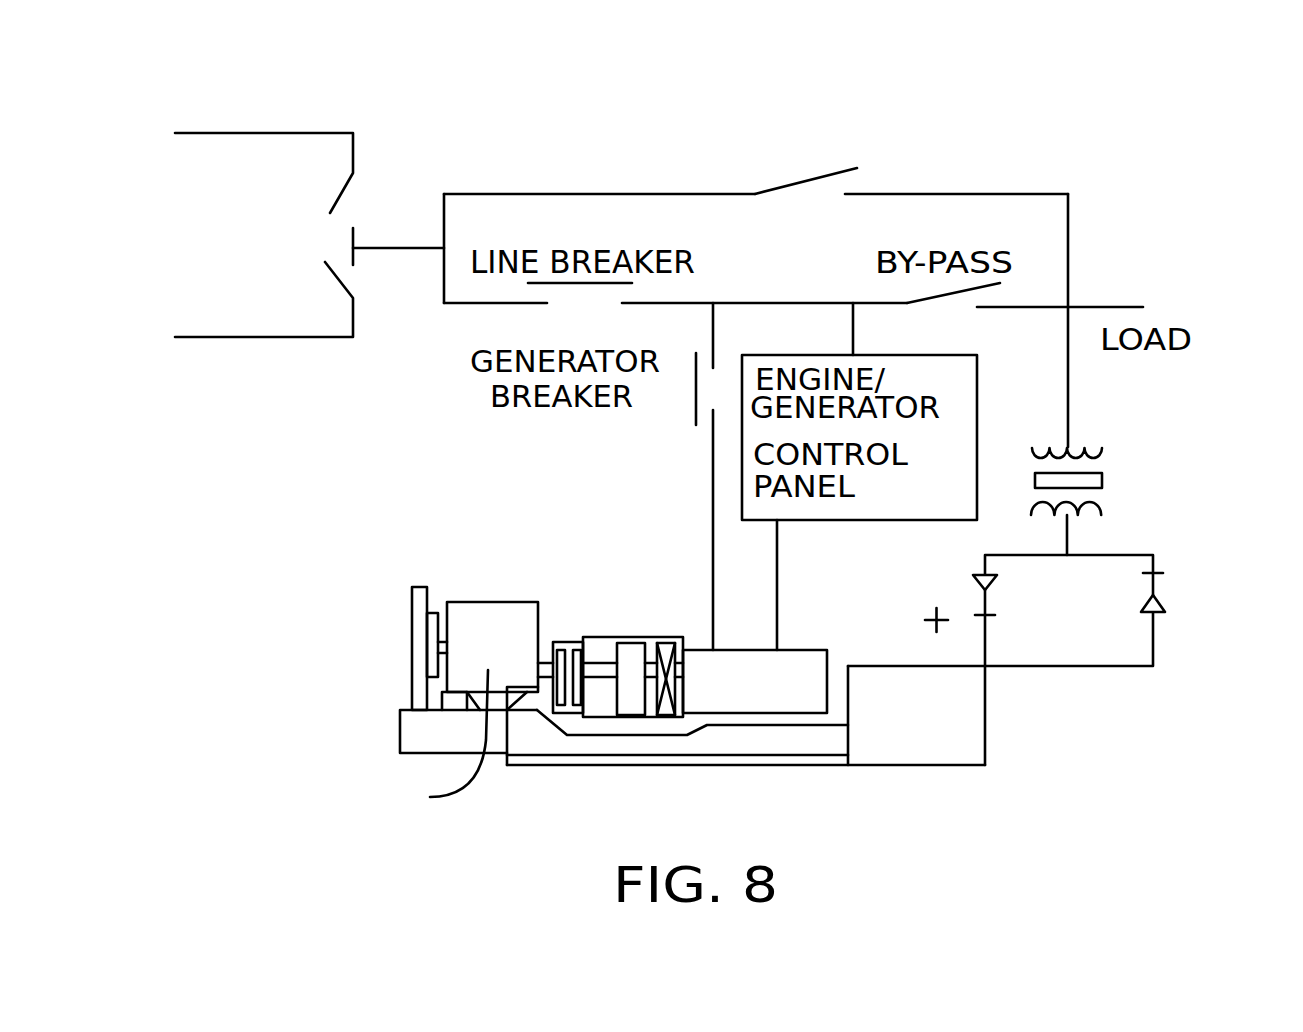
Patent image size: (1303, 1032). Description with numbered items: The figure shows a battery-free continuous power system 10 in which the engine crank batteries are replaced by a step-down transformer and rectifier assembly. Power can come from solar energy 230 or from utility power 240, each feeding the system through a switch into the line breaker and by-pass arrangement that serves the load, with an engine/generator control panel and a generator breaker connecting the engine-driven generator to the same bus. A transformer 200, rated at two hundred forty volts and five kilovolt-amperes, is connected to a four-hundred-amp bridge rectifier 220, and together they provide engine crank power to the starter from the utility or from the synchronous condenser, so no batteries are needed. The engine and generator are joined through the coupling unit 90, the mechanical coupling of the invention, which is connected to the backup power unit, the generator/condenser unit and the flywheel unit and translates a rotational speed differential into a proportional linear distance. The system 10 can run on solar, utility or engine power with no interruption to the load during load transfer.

The solar energy 230 is at (357, 116).
The utility power 240 is at (178, 377).
The system 10 is at (1087, 182).
The transformer 200 is at (1112, 474).
The bridge rectifier 220 is at (1172, 589).
The coupling unit 90 is at (610, 620).